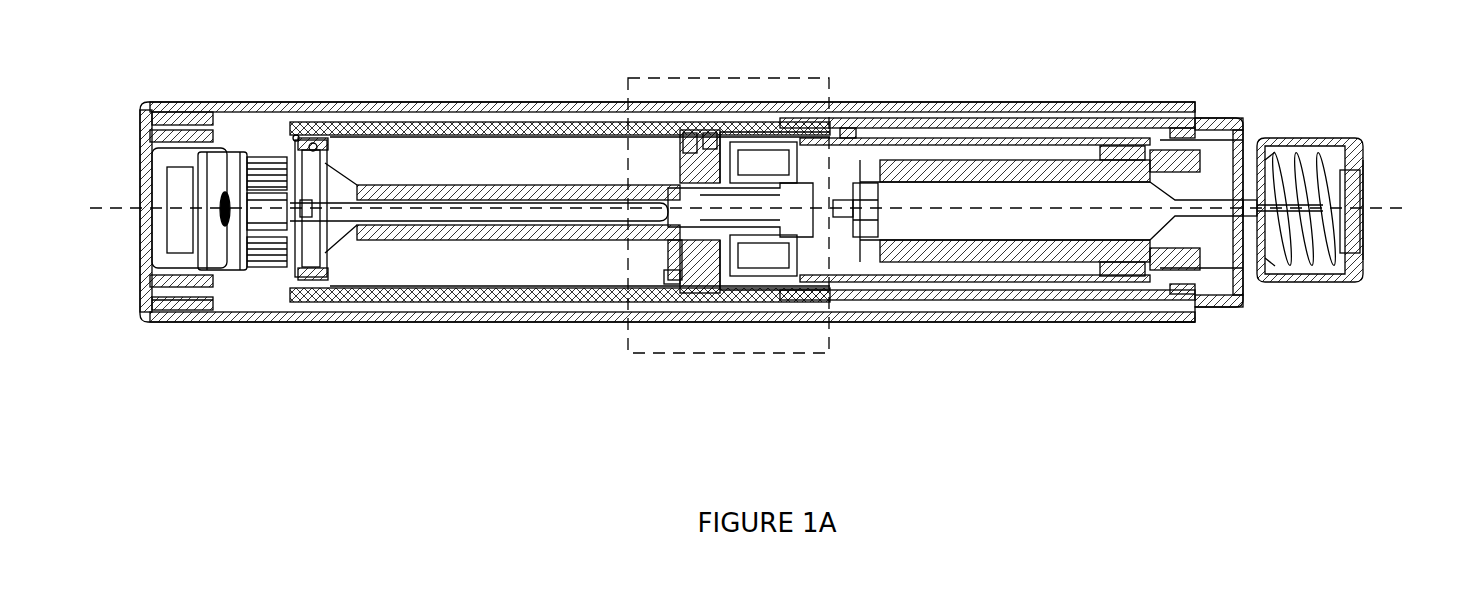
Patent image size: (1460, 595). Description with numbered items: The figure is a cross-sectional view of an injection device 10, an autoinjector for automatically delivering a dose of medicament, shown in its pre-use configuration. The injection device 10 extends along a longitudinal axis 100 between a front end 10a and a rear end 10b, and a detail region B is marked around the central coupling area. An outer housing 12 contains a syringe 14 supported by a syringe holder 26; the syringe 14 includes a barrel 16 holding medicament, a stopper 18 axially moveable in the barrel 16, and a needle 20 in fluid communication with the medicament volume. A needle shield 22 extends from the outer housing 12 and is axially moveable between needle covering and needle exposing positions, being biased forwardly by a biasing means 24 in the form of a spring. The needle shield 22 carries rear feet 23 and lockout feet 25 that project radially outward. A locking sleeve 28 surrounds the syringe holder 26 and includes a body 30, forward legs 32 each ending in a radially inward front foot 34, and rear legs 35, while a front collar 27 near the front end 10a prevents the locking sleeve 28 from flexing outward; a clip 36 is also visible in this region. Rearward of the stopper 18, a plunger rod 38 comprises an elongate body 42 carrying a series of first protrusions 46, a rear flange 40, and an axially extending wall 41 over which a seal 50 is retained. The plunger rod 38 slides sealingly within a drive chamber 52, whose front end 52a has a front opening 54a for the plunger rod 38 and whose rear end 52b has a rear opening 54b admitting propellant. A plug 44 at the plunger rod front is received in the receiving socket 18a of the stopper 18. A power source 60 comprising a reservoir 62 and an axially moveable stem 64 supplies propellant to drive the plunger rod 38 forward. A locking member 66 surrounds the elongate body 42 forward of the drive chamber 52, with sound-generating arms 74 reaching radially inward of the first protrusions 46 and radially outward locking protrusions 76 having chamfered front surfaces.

The injection device 10 is at (1340, 97).
The front end 10a is at (1400, 248).
The rear end 10b is at (123, 331).
The outer housing 12 is at (402, 100).
The syringe 14 is at (965, 257).
The barrel 16 is at (1087, 262).
The stopper 18 is at (868, 240).
The receiving socket 18a is at (842, 217).
The needle 20 is at (1265, 213).
The needle shield 22 is at (1322, 277).
The rear feet 23 is at (1112, 146).
The biasing means 24 is at (1243, 263).
The lockout feet 25 is at (1152, 150).
The syringe holder 26 is at (1022, 162).
The front collar 27 is at (1168, 322).
The locking sleeve 28 is at (1033, 128).
The body 30 is at (960, 128).
The forward legs 32 is at (1167, 128).
The front foot 34 is at (1183, 132).
The rear legs 35 is at (731, 132).
The clip 36 is at (848, 128).
The plunger rod 38 is at (440, 240).
The rear flange 40 is at (327, 280).
The axially extending wall 41 is at (318, 142).
The elongate body 42 is at (565, 232).
The plug 44 is at (805, 220).
The first protrusions 46 is at (508, 240).
The seal 50 is at (313, 282).
The drive chamber 52 is at (388, 300).
The front end 52a is at (678, 280).
The rear end 52b is at (296, 136).
The front opening 54a is at (673, 268).
The rear opening 54b is at (311, 224).
The power source 60 is at (178, 188).
The reservoir 62 is at (177, 223).
The stem 64 is at (263, 218).
The locking member 66 is at (708, 140).
The sound-generating arms 74 is at (703, 185).
The locking protrusions 76 is at (692, 147).
The longitudinal axis 100 is at (1398, 205).
The detail region B is at (817, 353).